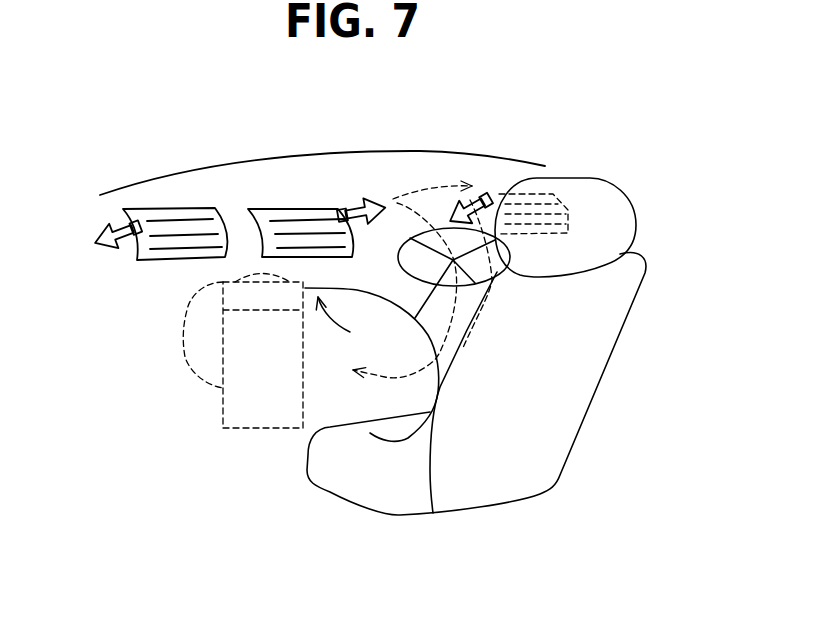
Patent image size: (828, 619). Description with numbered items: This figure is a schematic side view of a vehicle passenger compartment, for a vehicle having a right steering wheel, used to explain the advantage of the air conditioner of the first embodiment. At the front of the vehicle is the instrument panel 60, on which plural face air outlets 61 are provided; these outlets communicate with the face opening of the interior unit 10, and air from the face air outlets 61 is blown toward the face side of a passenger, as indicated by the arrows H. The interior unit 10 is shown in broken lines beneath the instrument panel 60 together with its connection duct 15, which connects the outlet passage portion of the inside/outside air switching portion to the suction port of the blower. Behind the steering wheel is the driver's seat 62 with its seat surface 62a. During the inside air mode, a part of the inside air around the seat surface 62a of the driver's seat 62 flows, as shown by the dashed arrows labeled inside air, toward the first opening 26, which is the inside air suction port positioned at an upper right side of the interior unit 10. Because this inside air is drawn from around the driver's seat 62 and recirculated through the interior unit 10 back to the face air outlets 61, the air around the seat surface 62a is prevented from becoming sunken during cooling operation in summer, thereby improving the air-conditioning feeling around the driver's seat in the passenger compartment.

The instrument panel 60 is at (257, 192).
The face air outlets 61 is at (173, 208).
The arrow H is at (102, 226).
The driver's seat 62 is at (593, 393).
The seat surface 62a is at (395, 430).
The first opening (inside air suction port) 26 is at (433, 513).
The interior unit 10 is at (262, 433).
The connection duct 15 is at (182, 335).
The inside air I is at (322, 325).